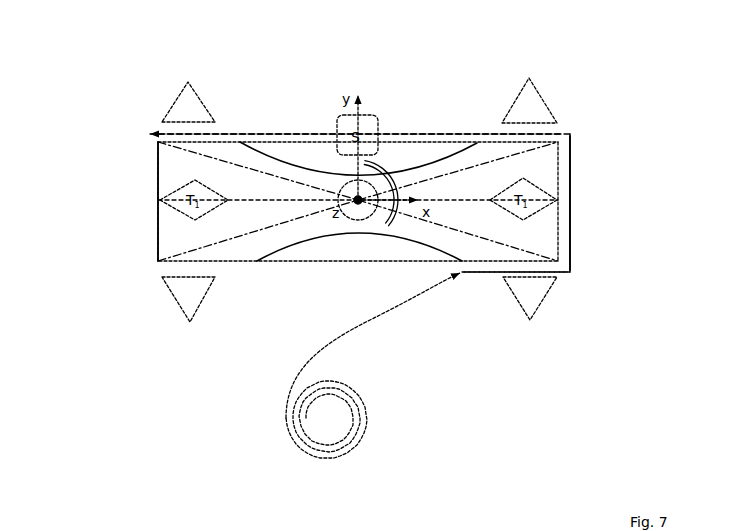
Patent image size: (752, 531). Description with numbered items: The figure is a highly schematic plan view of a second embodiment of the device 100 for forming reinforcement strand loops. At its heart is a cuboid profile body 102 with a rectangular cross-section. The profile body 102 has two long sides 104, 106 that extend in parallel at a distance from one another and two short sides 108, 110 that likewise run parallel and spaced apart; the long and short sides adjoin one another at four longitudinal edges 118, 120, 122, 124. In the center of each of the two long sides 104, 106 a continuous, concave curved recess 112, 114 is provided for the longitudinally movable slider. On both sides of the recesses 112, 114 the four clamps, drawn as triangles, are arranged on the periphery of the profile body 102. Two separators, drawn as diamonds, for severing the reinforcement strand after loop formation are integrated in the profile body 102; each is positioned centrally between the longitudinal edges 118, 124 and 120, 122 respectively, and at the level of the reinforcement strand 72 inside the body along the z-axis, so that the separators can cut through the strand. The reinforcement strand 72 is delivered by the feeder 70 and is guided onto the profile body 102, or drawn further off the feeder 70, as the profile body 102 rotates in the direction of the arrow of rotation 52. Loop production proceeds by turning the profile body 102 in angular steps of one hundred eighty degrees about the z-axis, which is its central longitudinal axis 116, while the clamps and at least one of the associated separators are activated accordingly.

The device 100 is at (568, 57).
The profile body 102 is at (263, 208).
The long side 104 is at (212, 137).
The long side 106 is at (240, 262).
The short side 108 is at (157, 178).
The short side 110 is at (572, 173).
The recess 112 is at (303, 153).
The recess 114 is at (375, 248).
The central longitudinal axis 116 is at (358, 200).
The longitudinal edge 118 is at (156, 141).
The longitudinal edge 120 is at (558, 142).
The longitudinal edge 122 is at (571, 262).
The longitudinal edge 124 is at (157, 261).
The arrow of rotation 52 is at (380, 180).
The feeder 70 is at (366, 446).
The reinforcement strand 72 is at (360, 353).